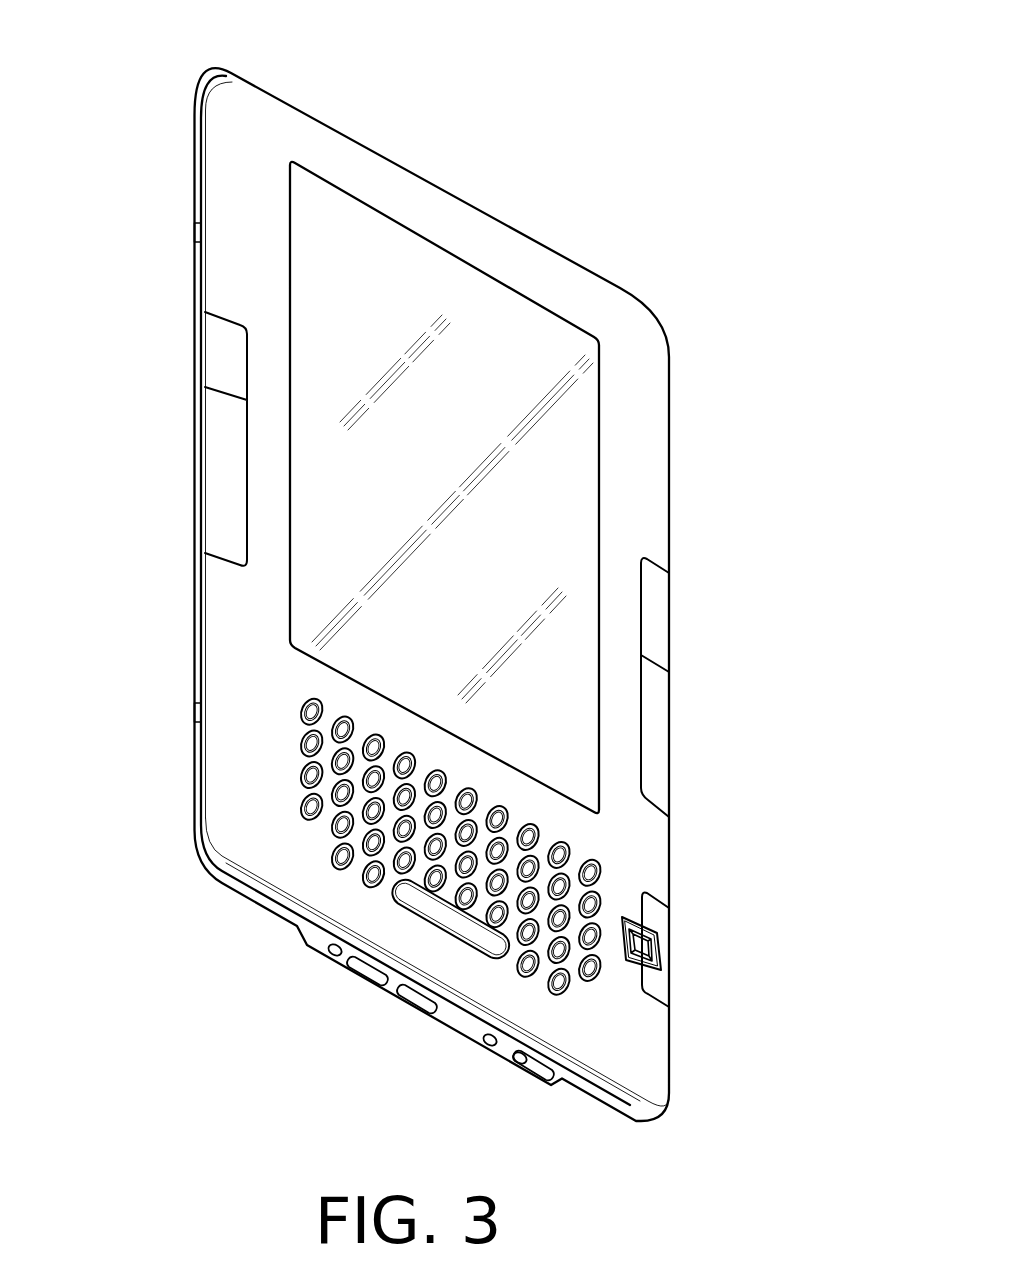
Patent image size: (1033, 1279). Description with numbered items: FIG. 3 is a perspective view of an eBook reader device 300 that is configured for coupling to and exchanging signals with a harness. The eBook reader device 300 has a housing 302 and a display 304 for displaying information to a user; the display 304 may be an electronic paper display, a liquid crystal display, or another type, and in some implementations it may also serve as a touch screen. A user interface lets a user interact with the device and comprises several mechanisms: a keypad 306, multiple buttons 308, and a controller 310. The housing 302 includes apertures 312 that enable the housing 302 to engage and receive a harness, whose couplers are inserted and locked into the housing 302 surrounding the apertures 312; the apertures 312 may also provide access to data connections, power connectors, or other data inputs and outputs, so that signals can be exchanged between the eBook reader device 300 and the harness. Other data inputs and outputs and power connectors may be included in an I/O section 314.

The eBook reader device 300 is at (680, 69).
The housing 302 is at (562, 257).
The display 304 is at (382, 235).
The keypad 306 is at (254, 862).
The buttons 308 is at (160, 388).
The controller 310 is at (692, 933).
The apertures 312 is at (195, 228).
The I/O section 314 is at (316, 1006).